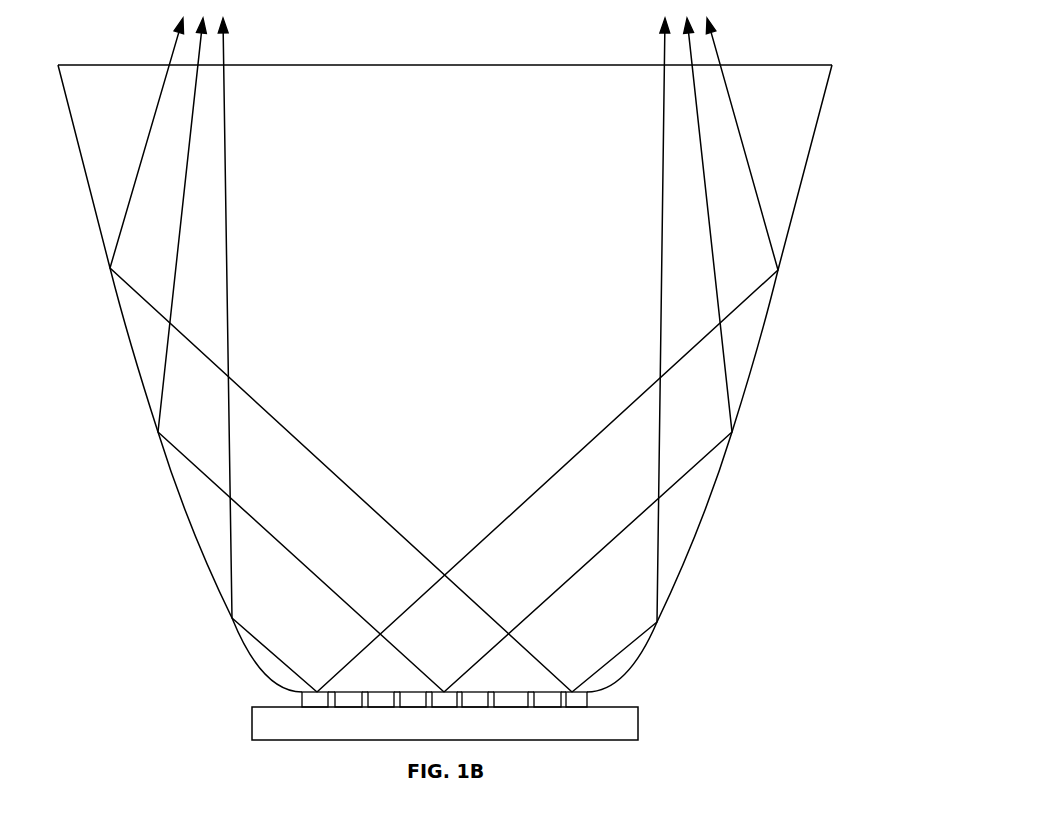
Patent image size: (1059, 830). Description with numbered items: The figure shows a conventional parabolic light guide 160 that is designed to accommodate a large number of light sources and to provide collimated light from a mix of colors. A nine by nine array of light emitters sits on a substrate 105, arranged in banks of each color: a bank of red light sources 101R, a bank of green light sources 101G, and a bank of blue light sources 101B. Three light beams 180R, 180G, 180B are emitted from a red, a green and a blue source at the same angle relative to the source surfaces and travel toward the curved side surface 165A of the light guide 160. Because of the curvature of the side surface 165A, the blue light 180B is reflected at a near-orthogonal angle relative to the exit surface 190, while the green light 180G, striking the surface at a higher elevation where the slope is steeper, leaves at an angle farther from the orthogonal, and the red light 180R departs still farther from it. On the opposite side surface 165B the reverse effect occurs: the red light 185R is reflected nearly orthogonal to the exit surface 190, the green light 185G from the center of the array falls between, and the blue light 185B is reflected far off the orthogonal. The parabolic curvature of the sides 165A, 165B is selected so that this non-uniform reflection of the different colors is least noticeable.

The exit surface 190 is at (767, 64).
The light guide 160 is at (751, 506).
The side surface 165A is at (760, 345).
The side surface 165B is at (128, 338).
The blue light 185B is at (343, 480).
The green light 185G is at (307, 558).
The red light 185R is at (273, 653).
The red light beam 180R is at (547, 483).
The green light beam 180G is at (587, 560).
The blue light beam 180B is at (615, 655).
The red light sources 101R is at (383, 697).
The green light sources 101G is at (477, 698).
The blue light sources 101B is at (570, 698).
The substrate 105 is at (603, 727).